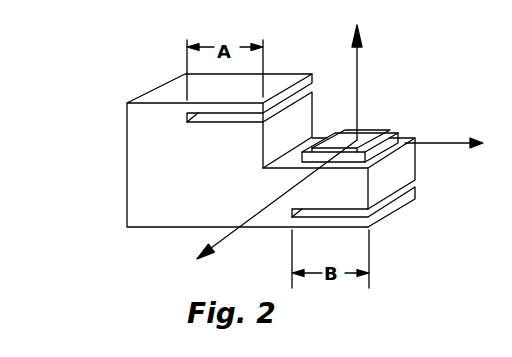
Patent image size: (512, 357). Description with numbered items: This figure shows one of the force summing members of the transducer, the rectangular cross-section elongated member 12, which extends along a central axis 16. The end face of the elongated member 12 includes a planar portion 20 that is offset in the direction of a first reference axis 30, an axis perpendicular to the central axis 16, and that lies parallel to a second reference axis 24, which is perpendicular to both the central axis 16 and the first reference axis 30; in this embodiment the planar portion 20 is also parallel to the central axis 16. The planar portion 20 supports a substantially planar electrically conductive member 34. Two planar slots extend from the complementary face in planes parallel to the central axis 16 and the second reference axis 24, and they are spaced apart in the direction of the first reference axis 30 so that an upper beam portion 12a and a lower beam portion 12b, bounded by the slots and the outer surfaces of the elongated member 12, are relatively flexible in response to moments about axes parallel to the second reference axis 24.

The elongated member 12 is at (164, 276).
The upper beam portion 12a is at (278, 73).
The lower beam portion 12b is at (350, 228).
The planar portion 20 is at (403, 133).
The electrically conductive member 34 is at (373, 133).
The first reference axis 30 is at (358, 70).
The second reference axis 24 is at (273, 203).
The central axis 16 is at (450, 142).